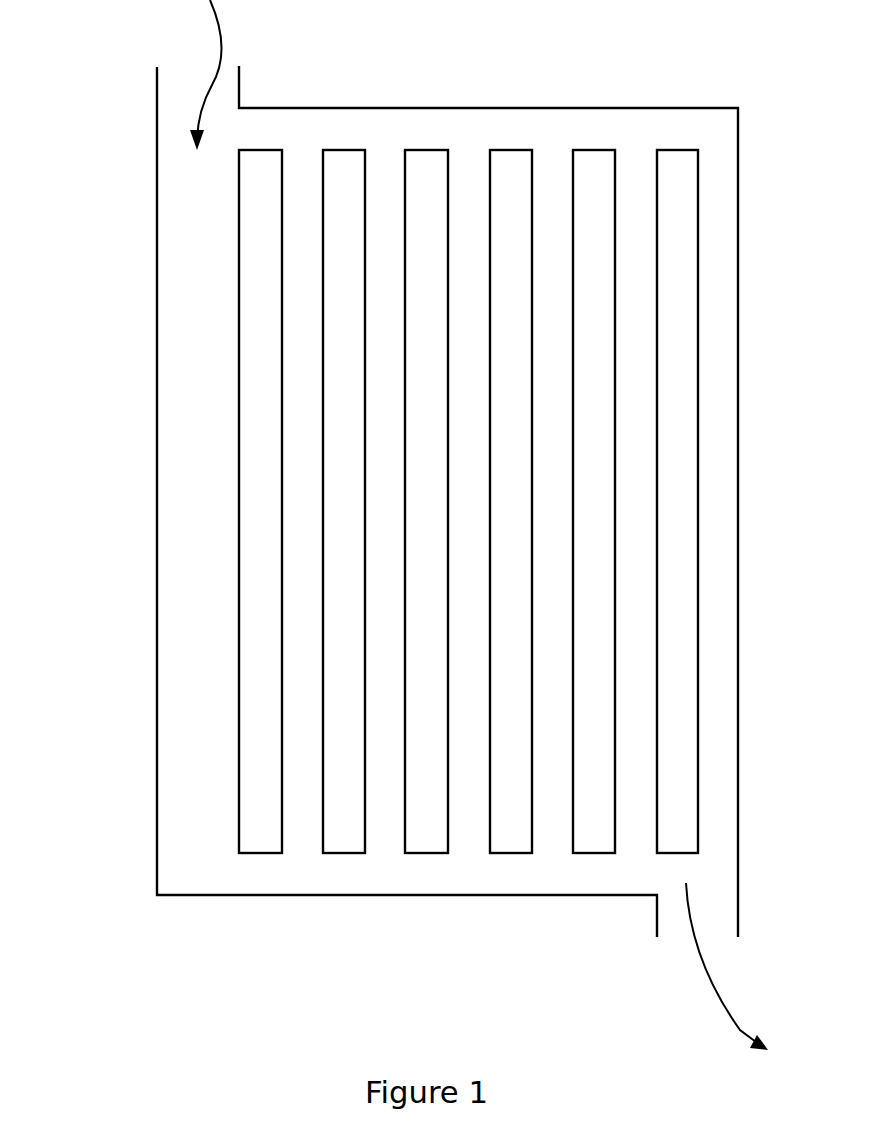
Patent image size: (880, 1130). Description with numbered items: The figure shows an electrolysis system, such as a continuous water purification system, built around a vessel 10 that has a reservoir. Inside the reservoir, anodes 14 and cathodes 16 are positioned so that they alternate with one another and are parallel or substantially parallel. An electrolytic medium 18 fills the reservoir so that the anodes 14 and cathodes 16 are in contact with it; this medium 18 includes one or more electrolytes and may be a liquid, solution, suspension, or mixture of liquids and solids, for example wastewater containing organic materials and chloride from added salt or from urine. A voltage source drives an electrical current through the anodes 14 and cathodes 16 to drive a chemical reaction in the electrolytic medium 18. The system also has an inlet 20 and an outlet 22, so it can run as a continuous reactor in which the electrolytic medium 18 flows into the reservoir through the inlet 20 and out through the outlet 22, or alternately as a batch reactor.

The vessel 10 is at (363, 108).
The anodes 14 is at (239, 795).
The cathodes 16 is at (323, 793).
The electrolytic medium 18 is at (188, 470).
The inlet 20 is at (270, 66).
The outlet 22 is at (626, 924).